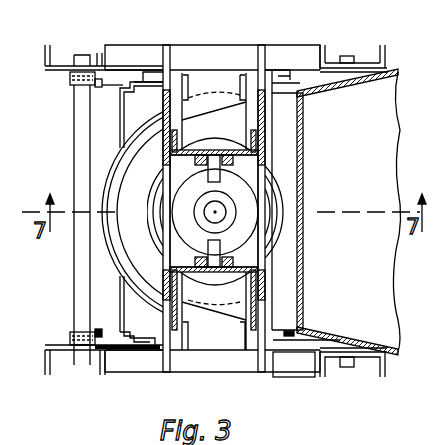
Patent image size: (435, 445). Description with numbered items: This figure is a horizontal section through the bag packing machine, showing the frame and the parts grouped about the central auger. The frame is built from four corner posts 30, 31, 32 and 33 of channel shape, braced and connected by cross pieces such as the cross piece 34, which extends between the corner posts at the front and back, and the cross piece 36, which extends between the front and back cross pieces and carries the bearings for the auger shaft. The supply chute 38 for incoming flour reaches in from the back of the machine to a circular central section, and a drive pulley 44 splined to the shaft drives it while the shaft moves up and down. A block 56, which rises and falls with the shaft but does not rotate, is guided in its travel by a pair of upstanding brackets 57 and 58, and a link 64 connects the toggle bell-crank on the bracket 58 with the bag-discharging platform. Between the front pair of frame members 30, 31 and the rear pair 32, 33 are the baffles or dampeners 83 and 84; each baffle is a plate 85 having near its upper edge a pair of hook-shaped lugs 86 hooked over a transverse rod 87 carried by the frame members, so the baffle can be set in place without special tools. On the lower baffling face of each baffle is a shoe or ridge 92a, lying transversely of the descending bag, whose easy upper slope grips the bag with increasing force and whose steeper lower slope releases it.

The corner post 30 is at (57, 60).
The corner post 31 is at (54, 356).
The corner post 32 is at (372, 357).
The corner post 33 is at (367, 68).
The cross piece 34 is at (226, 56).
The cross piece 36 is at (252, 342).
The supply chute 38 is at (368, 179).
The drive pulley 44 is at (297, 176).
The block 56 is at (193, 190).
The upstanding bracket 57 is at (232, 150).
The upstanding bracket 58 is at (236, 282).
The link 64 is at (282, 338).
The baffle 83 is at (116, 121).
The baffle 84 is at (321, 358).
The plate 85 is at (126, 340).
The hook-shaped lug 86 is at (72, 84).
The rod 87 is at (74, 155).
The shoe 92a is at (289, 78).